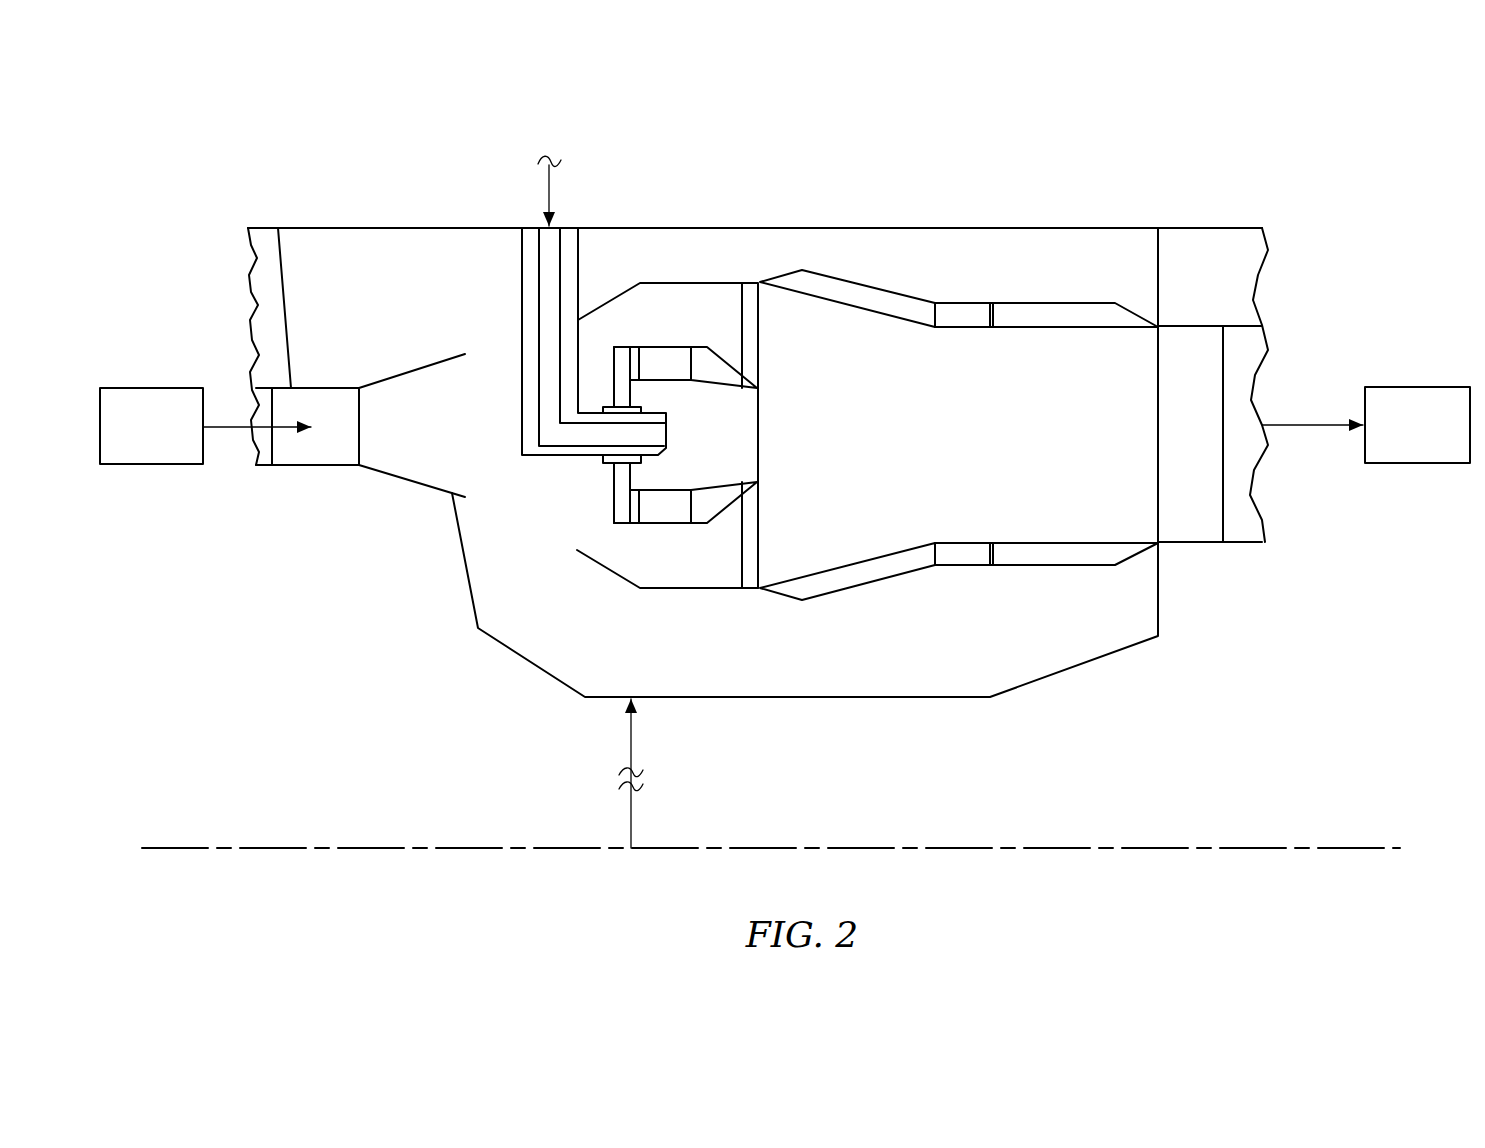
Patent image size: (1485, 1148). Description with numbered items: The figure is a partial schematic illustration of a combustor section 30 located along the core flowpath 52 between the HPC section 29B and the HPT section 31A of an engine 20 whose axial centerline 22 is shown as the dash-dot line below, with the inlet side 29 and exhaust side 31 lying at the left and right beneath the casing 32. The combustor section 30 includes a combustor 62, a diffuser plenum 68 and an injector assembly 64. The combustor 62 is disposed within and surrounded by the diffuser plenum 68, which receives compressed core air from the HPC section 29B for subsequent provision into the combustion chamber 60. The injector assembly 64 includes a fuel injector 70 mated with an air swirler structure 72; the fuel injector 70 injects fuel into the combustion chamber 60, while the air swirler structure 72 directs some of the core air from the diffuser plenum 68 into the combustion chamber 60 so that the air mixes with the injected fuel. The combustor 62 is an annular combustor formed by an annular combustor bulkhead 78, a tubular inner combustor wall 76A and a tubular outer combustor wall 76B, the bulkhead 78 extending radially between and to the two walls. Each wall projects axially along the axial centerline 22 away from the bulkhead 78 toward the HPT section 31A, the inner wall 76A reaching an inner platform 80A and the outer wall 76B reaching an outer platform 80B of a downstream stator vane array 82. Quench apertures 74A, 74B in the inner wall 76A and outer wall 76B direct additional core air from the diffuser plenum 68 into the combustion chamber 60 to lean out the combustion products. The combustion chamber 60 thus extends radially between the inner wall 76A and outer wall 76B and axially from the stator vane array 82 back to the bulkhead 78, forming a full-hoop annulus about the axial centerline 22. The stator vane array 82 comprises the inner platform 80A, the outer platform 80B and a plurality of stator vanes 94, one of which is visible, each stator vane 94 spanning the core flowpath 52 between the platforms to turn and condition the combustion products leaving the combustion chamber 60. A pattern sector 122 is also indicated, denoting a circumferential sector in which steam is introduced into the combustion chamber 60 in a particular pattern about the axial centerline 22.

The gas turbine engine 20 is at (785, 450).
The axial centerline 22 is at (150, 846).
The inlet section 29 is at (153, 356).
The HPC section 29B is at (132, 443).
The combustor section 30 is at (903, 138).
The exhaust section 31 is at (1335, 183).
The HPT section 31A is at (1396, 442).
The outer casing 32 is at (398, 224).
The core flowpath 52 is at (261, 450).
The combustion chamber 60 is at (942, 441).
The combustor 62 is at (1045, 280).
The injector assembly 64 is at (543, 480).
The diffuser plenum 68 is at (430, 313).
The fuel injector 70 is at (508, 429).
The air swirler structure 72 is at (731, 351).
The quench aperture 74A is at (975, 562).
The quench aperture 74B is at (976, 320).
The inner combustor wall 76A is at (878, 600).
The outer combustor wall 76B is at (890, 285).
The combustor bulkhead 78 is at (776, 532).
The inner platform 80A is at (1197, 544).
The outer platform 80B is at (1197, 324).
The stator vane array 82 is at (1245, 344).
The stator vane 94 is at (1224, 490).
The pattern sector 122 is at (655, 599).